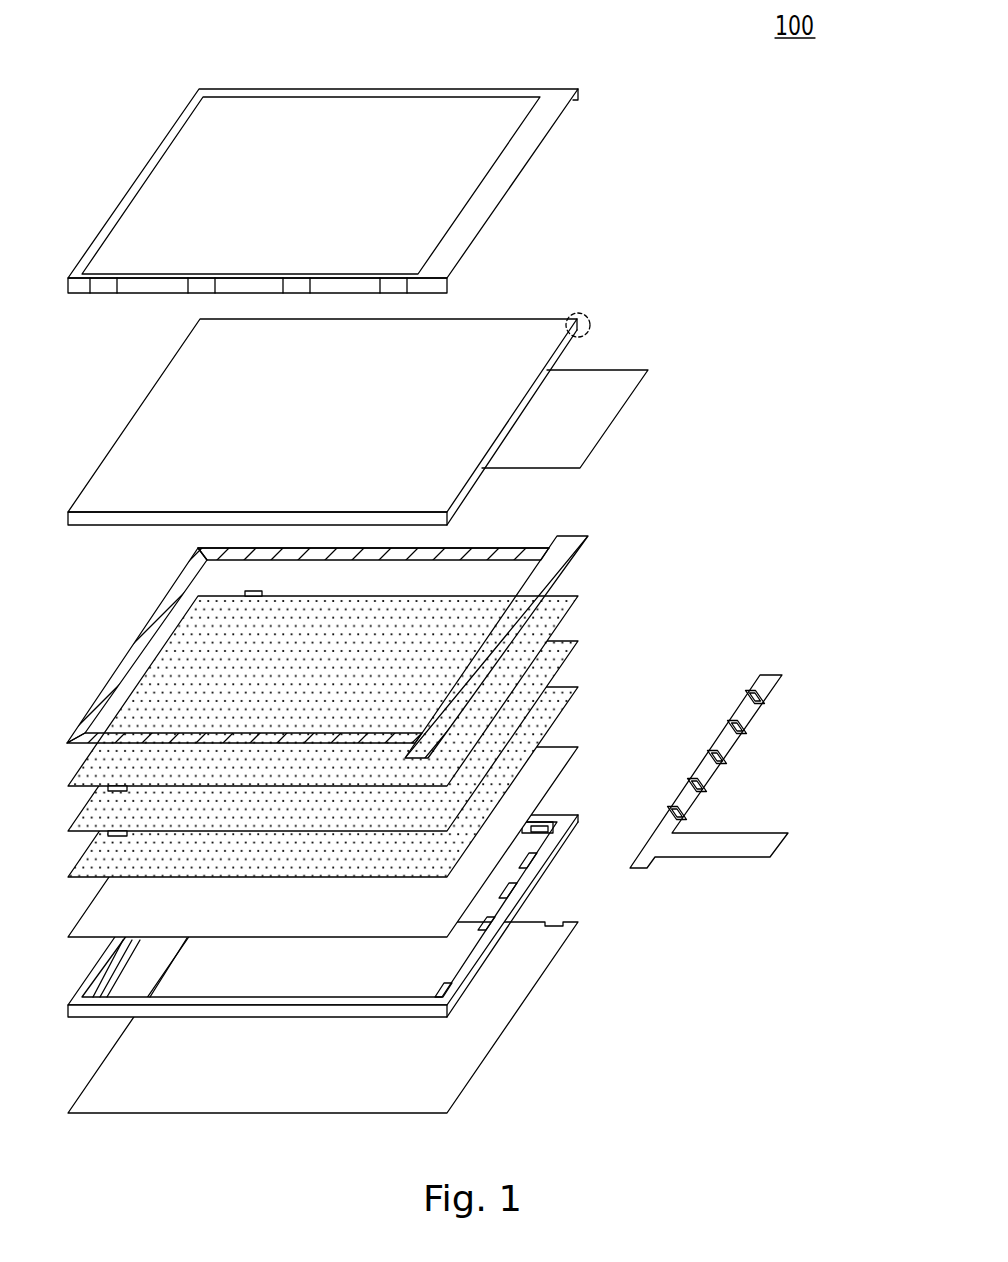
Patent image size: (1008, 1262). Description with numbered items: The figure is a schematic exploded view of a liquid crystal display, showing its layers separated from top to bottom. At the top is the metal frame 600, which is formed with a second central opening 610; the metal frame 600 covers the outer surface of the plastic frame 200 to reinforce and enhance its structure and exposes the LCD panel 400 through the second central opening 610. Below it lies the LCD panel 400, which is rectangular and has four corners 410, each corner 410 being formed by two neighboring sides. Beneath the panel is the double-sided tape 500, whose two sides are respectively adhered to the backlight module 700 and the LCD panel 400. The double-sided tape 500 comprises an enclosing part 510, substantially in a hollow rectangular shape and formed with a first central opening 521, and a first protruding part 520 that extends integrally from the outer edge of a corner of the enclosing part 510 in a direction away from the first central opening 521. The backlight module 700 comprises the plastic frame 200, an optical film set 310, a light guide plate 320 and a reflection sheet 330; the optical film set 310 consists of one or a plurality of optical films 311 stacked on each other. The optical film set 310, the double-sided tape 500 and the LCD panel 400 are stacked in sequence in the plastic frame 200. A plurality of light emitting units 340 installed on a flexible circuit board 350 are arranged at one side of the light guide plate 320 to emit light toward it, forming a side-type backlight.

The plastic frame 200 is at (506, 951).
The optical film set 310 is at (447, 700).
The optical film 311 is at (563, 600).
The light guide plate 320 is at (560, 743).
The reflection sheet 330 is at (498, 1005).
The light emitting units 340 is at (728, 752).
The flexible circuit board 350 is at (710, 773).
The LCD panel 400 is at (400, 397).
The corner 410 is at (590, 325).
The double-sided tape 500 is at (321, 637).
The enclosing part 510 is at (157, 620).
The first protruding part 520 is at (422, 748).
The first central opening 521 is at (483, 553).
The metal frame 600 is at (371, 149).
The second central opening 610 is at (425, 128).
The backlight module 700 is at (482, 818).